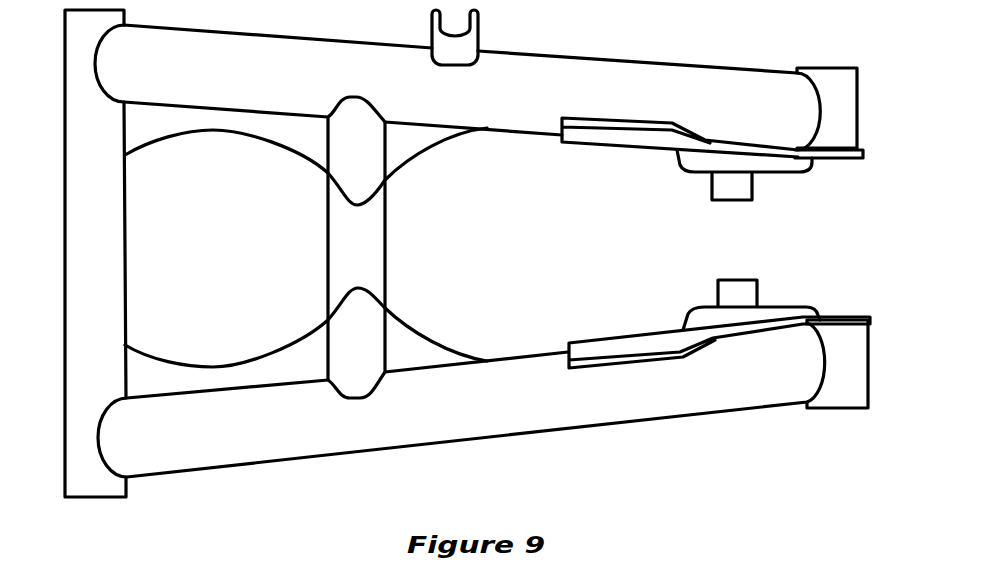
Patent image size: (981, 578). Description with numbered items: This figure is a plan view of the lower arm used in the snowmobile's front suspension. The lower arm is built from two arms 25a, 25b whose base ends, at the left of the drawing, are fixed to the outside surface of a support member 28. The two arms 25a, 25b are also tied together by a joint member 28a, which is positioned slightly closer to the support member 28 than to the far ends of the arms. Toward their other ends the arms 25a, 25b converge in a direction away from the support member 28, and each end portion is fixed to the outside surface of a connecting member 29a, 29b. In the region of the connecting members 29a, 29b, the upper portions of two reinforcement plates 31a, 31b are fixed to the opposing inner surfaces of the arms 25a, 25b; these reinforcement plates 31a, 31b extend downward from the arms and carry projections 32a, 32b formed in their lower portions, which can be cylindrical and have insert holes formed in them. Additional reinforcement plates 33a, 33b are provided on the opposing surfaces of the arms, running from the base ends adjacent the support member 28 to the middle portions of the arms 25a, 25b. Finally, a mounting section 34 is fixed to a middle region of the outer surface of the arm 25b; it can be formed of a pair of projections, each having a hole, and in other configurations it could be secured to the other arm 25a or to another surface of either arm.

The arm 25a is at (622, 417).
The arm 25b is at (255, 43).
The support member 28 is at (73, 184).
The joint member 28a is at (337, 233).
The connecting member 29a is at (862, 362).
The connecting member 29b is at (852, 115).
The reinforcement plate 31a is at (610, 346).
The reinforcement plate 31b is at (597, 137).
The projection 32a is at (750, 295).
The projection 32b is at (752, 190).
The reinforcement plate 33a is at (281, 366).
The reinforcement plate 33b is at (297, 143).
The mounting section 34 is at (453, 42).